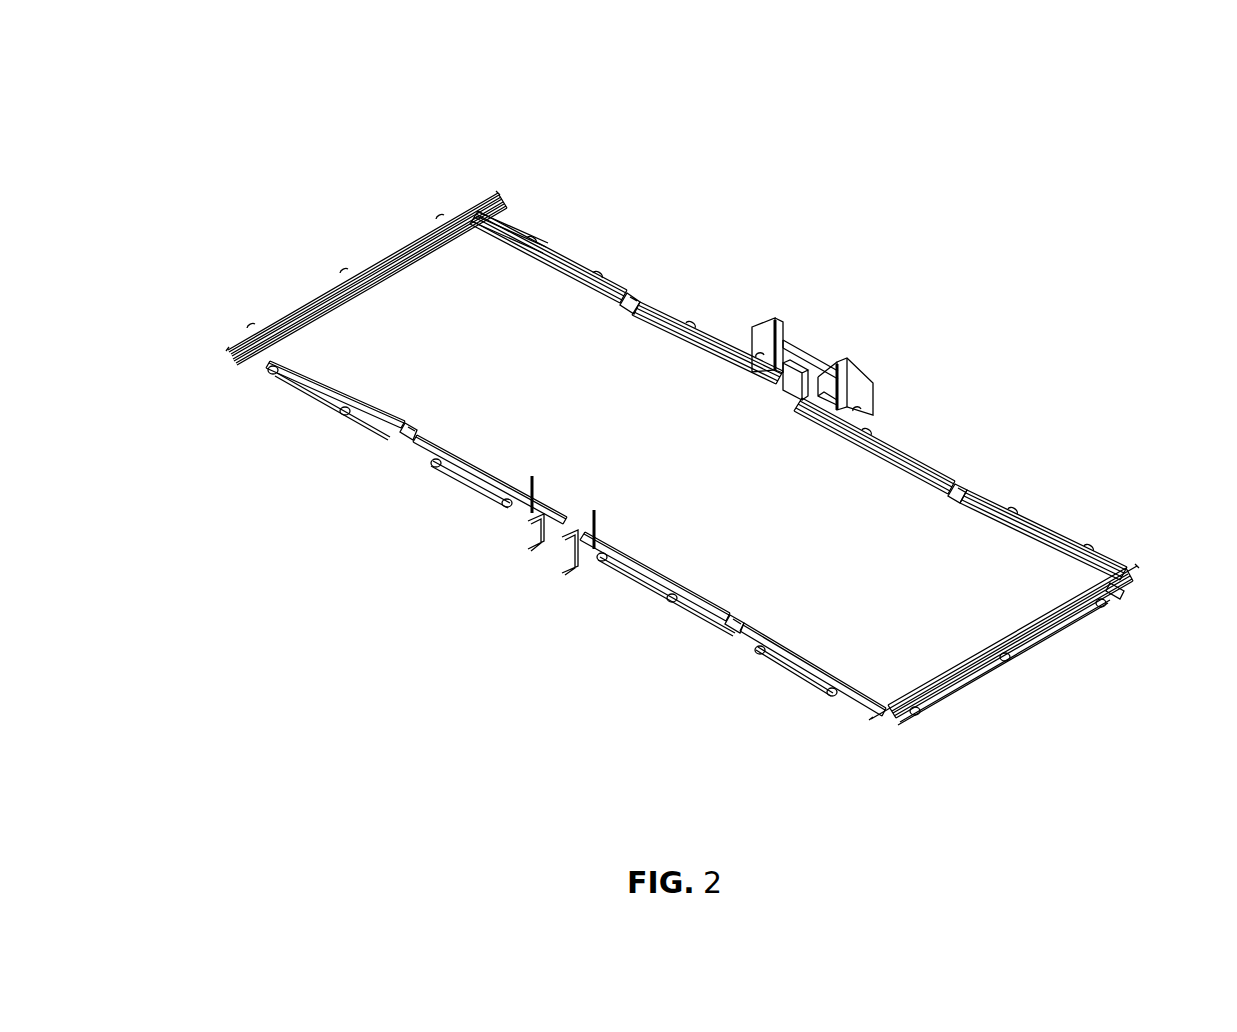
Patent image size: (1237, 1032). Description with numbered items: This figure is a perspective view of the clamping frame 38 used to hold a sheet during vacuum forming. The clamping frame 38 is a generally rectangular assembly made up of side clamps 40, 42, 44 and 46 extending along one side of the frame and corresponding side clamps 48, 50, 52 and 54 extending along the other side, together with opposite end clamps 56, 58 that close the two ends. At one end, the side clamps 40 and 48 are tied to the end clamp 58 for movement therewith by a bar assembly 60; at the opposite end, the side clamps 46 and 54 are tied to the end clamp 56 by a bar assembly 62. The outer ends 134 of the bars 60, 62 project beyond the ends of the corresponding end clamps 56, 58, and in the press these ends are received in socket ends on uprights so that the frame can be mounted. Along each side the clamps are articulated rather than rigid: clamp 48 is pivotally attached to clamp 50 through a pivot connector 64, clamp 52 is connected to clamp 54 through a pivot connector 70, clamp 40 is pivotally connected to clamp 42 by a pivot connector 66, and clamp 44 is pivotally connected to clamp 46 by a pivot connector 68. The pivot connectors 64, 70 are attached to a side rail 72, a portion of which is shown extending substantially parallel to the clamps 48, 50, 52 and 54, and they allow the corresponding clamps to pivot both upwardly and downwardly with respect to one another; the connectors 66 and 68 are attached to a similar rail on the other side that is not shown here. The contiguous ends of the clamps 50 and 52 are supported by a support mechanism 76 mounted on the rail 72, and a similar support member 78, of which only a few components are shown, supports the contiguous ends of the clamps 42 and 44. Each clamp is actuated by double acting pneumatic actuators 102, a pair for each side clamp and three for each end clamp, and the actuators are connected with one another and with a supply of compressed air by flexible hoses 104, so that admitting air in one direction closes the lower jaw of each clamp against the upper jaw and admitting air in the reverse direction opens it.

The clamping frame 38 is at (476, 182).
The outer ends of the bars 134 is at (498, 193).
The end clamp 56 is at (322, 300).
The bar assembly 62 is at (412, 233).
The side clamp 54 is at (585, 255).
The pivot connector 70 is at (636, 300).
The side clamp 52 is at (735, 343).
The support mechanism 76 is at (863, 325).
The side rail 72 is at (875, 388).
The side clamp 50 is at (903, 440).
The pivot connector 64 is at (966, 488).
The side clamp 48 is at (1040, 528).
The end clamp 58 is at (1068, 615).
The bar assembly 60 is at (1112, 590).
The double acting pneumatic actuator 102 is at (350, 408).
The flexible hose 104 is at (420, 470).
The side clamp 46 is at (322, 385).
The pivot connector 68 is at (406, 430).
The side clamp 44 is at (492, 480).
The support member 78 is at (520, 571).
The side clamp 42 is at (630, 560).
The pivot connector 66 is at (737, 627).
The side clamp 40 is at (795, 652).